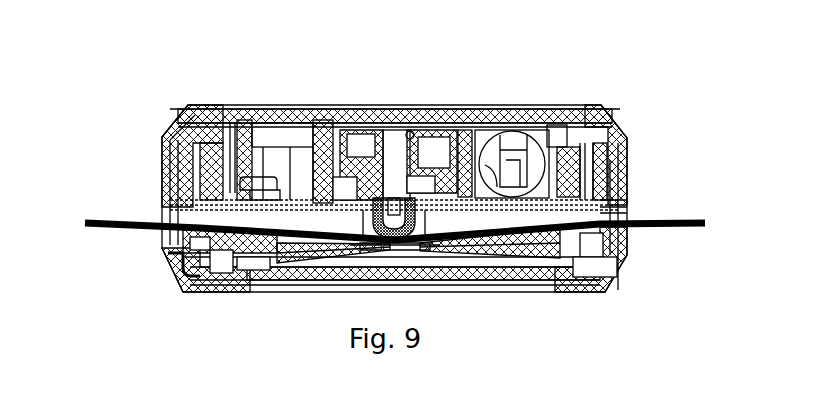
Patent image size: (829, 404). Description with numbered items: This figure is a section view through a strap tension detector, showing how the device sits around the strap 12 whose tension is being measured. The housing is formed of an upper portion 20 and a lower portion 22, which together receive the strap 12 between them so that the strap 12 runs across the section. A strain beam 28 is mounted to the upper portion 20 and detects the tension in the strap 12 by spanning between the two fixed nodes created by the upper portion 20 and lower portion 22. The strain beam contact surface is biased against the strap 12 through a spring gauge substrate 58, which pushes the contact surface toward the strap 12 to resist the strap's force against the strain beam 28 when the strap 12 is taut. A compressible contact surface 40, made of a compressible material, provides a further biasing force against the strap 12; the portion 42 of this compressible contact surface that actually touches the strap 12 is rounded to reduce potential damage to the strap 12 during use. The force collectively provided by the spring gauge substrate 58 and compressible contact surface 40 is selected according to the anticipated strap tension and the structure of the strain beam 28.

The strap 12 is at (102, 232).
The upper portion 20 is at (570, 107).
The lower portion 22 is at (215, 291).
The strain beam 28 is at (418, 150).
The compressible contact surface 40 is at (418, 224).
The rounded contact surface 42 is at (375, 233).
The spring gauge substrate 58 is at (362, 135).